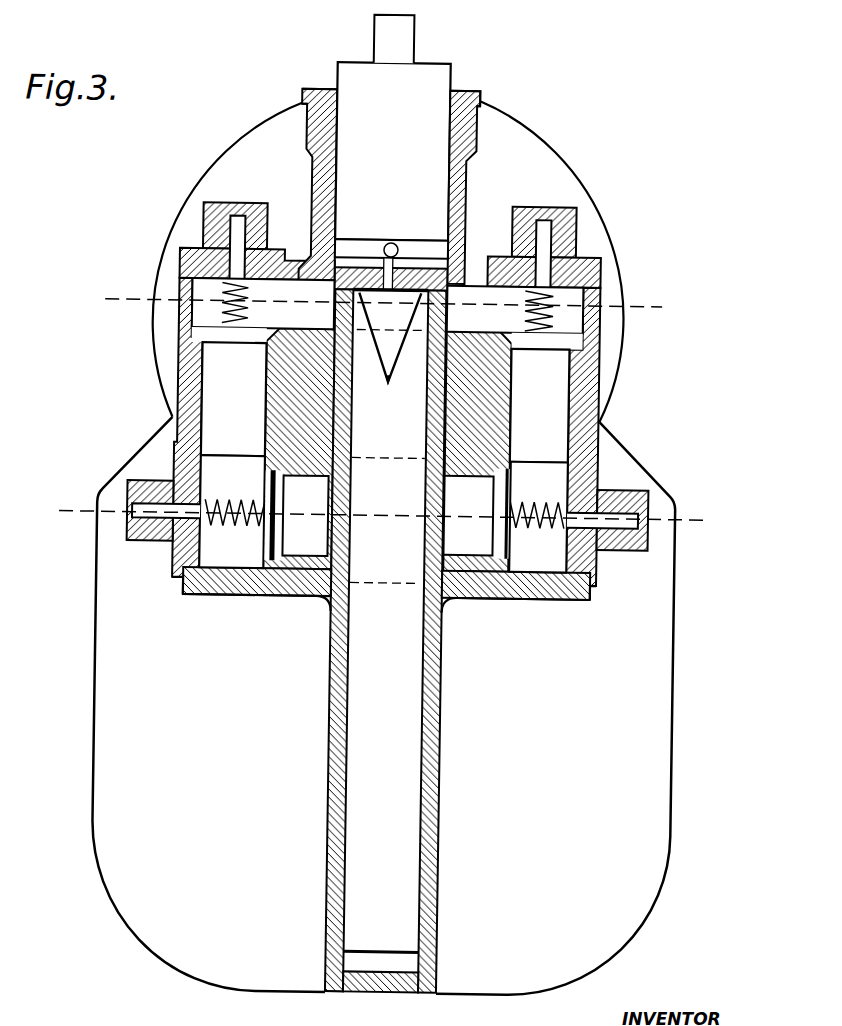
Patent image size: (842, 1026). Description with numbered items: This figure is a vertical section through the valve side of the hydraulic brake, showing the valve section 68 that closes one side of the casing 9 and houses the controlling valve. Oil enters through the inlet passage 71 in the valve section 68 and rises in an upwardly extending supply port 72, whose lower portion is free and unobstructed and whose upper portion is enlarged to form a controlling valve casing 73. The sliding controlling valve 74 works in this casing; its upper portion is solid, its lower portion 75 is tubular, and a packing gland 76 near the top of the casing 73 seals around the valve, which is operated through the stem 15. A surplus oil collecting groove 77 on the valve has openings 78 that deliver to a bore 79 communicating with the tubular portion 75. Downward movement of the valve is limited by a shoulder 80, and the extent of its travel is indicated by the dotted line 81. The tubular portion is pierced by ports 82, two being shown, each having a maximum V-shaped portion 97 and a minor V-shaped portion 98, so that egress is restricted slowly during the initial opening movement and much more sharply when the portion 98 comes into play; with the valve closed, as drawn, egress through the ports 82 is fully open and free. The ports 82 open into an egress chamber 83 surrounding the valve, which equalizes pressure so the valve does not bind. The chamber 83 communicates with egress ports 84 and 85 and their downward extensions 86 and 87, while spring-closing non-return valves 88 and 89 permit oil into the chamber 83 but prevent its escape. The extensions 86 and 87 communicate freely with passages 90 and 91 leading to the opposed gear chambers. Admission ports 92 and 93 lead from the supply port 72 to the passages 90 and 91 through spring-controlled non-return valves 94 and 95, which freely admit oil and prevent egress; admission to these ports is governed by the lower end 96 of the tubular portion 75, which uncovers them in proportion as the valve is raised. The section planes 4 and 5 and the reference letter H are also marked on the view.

The section line 4- 4 is at (386, 302).
The section line 5- 5 is at (387, 515).
The casing 9 is at (170, 235).
The valve stem 15 is at (392, 45).
The valve section 68 is at (680, 644).
The inlet passage 71 is at (360, 974).
The supply port 72 is at (442, 792).
The controlling valve casing 73 is at (458, 189).
The controlling valve 74 is at (361, 199).
The tubular portion 75 is at (338, 561).
The packing gland 76 is at (470, 94).
The surplus oil collecting groove 77 is at (354, 248).
The openings 78 is at (394, 243).
The bore 79 is at (389, 272).
The shoulder 80 is at (439, 596).
The dotted line 81 is at (392, 456).
The ports 82 is at (383, 319).
The egress chamber 83 is at (388, 306).
The egress port 84 is at (303, 314).
The egress port 85 is at (476, 313).
The downward extension 86 is at (224, 403).
The downward extension 87 is at (541, 396).
The non-return valve 88 is at (207, 333).
The non-return valve 89 is at (563, 337).
The passage 90 is at (234, 548).
The passage 91 is at (549, 554).
The admission port 92 is at (308, 530).
The admission port 93 is at (469, 537).
The non-return valve 94 is at (295, 518).
The non-return valve 95 is at (503, 496).
The lower end 96 is at (383, 566).
The maximum V-shaped portion 97 is at (389, 338).
The minor V-shaped portion 98 is at (388, 379).
The height H is at (401, 586).